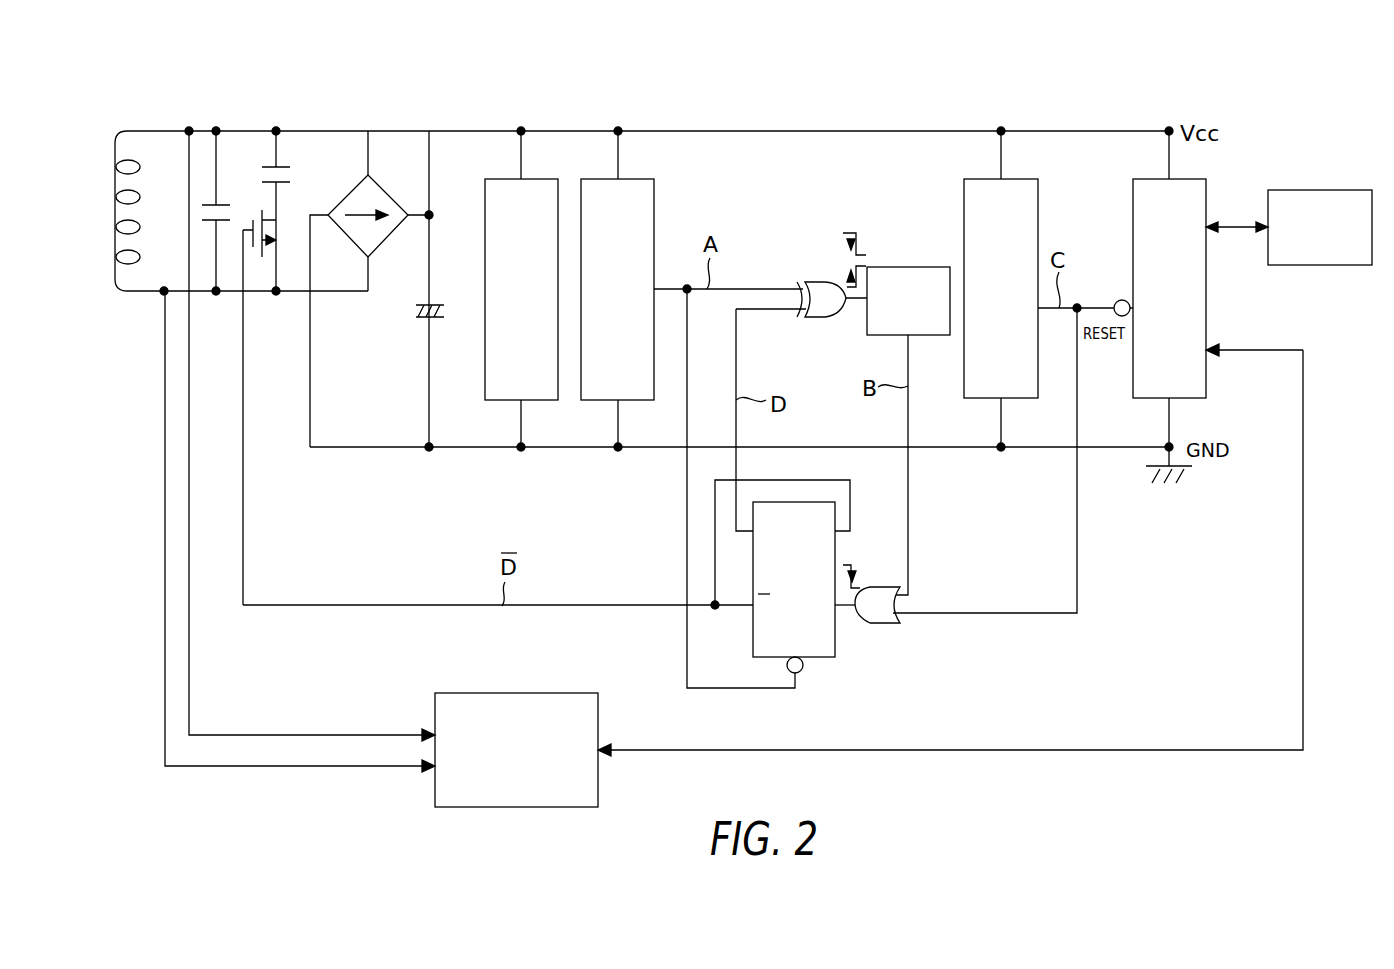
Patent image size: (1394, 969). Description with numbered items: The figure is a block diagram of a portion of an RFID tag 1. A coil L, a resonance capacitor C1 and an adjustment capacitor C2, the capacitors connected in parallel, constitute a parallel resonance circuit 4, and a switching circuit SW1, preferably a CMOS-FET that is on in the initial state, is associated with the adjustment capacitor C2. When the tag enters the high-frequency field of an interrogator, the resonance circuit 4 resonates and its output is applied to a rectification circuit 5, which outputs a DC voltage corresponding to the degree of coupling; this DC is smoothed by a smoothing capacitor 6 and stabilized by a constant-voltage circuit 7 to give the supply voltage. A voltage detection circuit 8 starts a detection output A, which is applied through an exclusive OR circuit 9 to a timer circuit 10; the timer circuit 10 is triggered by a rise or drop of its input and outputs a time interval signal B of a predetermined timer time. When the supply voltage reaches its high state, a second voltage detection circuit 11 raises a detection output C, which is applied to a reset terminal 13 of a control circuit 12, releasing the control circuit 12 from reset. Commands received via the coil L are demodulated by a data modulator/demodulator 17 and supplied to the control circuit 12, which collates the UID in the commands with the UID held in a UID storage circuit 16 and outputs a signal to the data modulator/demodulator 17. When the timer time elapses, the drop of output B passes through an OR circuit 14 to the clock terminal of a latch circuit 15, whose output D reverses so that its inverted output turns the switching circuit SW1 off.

The RFID tag 1 is at (652, 104).
The parallel resonance circuit 4 is at (327, 118).
The rectification circuit 5 is at (390, 190).
The smoothing capacitor 6 is at (415, 308).
The constant-voltage circuit 7 is at (485, 216).
The voltage detection circuit 8 is at (654, 217).
The exclusive OR circuit 9 is at (812, 280).
The timer circuit 10 is at (887, 268).
The second voltage detection circuit 11 is at (1038, 222).
The control circuit 12 is at (1133, 210).
The reset terminal 13 is at (1120, 300).
The OR circuit 14 is at (897, 628).
The latch circuit 15 is at (825, 660).
The UID storage circuit 16 is at (1320, 190).
The data modulator/demodulator 17 is at (508, 693).
The coil L is at (112, 208).
The resonance capacitor C1 is at (218, 204).
The adjustment capacitor C2 is at (292, 176).
The switching circuit SW1 is at (262, 258).